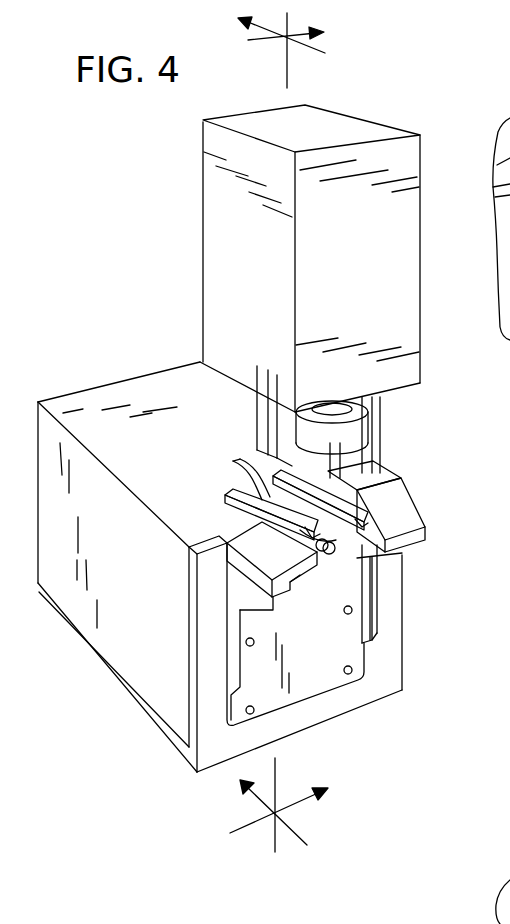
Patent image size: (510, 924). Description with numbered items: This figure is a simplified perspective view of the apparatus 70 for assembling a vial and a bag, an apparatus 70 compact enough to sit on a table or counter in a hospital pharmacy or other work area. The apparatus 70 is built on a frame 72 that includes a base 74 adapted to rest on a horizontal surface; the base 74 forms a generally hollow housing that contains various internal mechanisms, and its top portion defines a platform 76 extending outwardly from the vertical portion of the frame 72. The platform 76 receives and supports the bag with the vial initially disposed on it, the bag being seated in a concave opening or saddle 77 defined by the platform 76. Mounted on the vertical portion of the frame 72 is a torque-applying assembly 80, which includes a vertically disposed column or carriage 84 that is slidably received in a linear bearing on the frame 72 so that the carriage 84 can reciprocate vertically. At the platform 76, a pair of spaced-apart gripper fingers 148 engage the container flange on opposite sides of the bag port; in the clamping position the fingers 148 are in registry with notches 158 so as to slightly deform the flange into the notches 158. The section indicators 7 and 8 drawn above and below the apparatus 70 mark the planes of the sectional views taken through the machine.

The section line 7- 7 is at (287, 435).
The section line 8- 8 is at (266, 431).
The apparatus 70 is at (142, 206).
The torque-applying assembly 80 is at (188, 296).
The carriage 84 is at (278, 421).
The frame 72 is at (392, 443).
The notches 158 is at (373, 514).
The gripper fingers 148 is at (233, 461).
The saddle 77 is at (345, 550).
The platform 76 is at (413, 518).
The base 74 is at (178, 738).